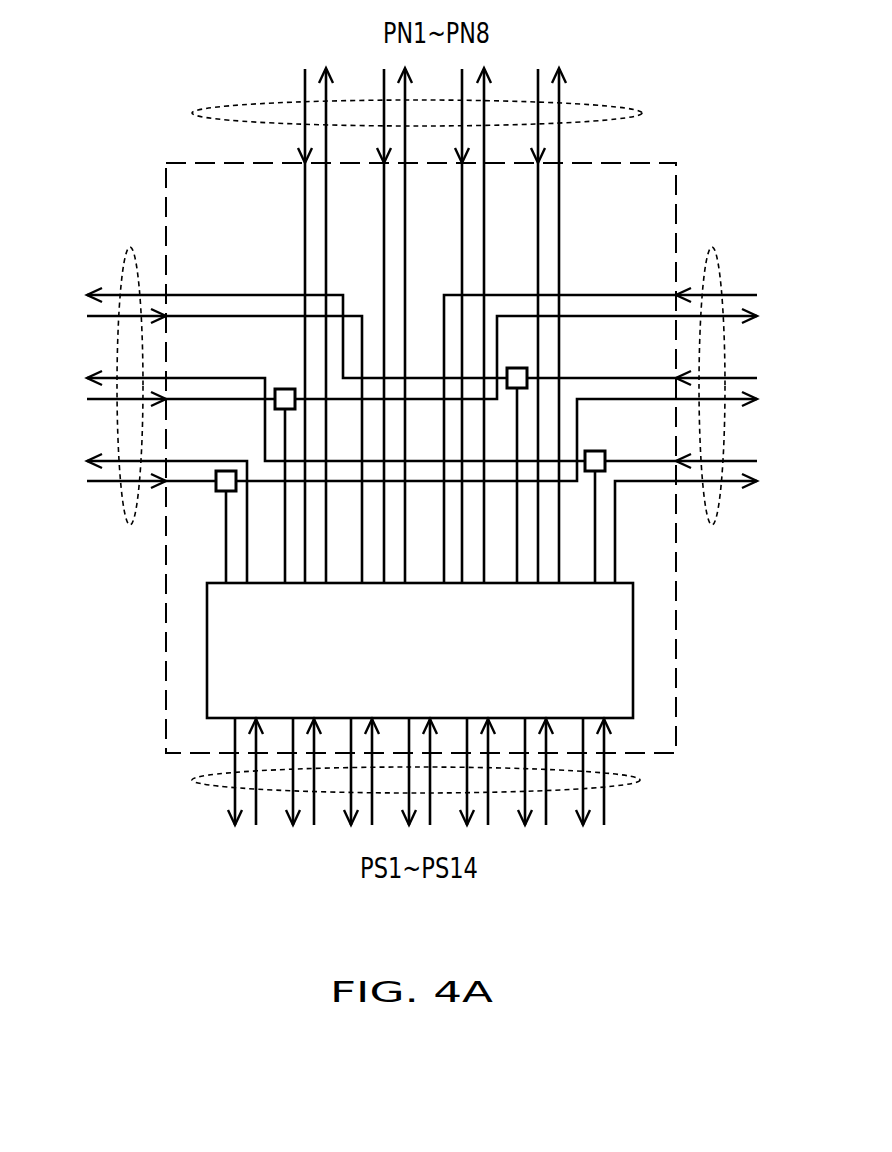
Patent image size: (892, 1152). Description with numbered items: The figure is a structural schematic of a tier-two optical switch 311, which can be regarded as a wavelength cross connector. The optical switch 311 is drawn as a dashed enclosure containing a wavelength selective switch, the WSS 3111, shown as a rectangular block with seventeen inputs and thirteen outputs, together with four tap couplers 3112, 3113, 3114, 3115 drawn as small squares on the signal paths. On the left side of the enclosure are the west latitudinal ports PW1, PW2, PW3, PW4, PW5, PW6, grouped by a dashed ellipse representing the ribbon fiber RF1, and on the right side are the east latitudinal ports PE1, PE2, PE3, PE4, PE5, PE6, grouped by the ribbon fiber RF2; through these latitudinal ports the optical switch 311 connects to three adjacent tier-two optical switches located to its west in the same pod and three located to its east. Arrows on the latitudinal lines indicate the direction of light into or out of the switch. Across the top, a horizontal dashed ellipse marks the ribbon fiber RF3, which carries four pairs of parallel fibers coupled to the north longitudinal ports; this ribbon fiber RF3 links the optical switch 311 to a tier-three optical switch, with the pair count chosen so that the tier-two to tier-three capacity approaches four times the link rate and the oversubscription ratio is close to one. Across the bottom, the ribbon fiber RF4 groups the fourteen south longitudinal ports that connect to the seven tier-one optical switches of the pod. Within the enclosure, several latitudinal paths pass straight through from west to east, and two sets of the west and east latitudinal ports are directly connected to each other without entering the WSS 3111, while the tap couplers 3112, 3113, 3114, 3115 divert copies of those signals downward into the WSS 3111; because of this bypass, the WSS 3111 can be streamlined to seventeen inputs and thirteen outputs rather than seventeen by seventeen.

The optical switch 311 is at (658, 161).
The WSS 3111 is at (633, 652).
The tap coupler 3112 is at (215, 472).
The tap coupler 3113 is at (284, 388).
The tap coupler 3114 is at (522, 367).
The tap coupler 3115 is at (593, 451).
The ribbon fiber RF1 is at (122, 263).
The ribbon fiber RF2 is at (718, 265).
The ribbon fiber RF3 is at (607, 105).
The ribbon fiber RF4 is at (615, 787).
The west latitudinal port PW1 is at (57, 292).
The west latitudinal port PW2 is at (57, 322).
The west latitudinal port PW3 is at (57, 376).
The west latitudinal port PW4 is at (57, 406).
The west latitudinal port PW5 is at (57, 457).
The west latitudinal port PW6 is at (57, 488).
The east latitudinal port PE1 is at (785, 293).
The east latitudinal port PE2 is at (785, 323).
The east latitudinal port PE3 is at (785, 377).
The east latitudinal port PE4 is at (785, 405).
The east latitudinal port PE5 is at (785, 460).
The east latitudinal port PE6 is at (785, 488).